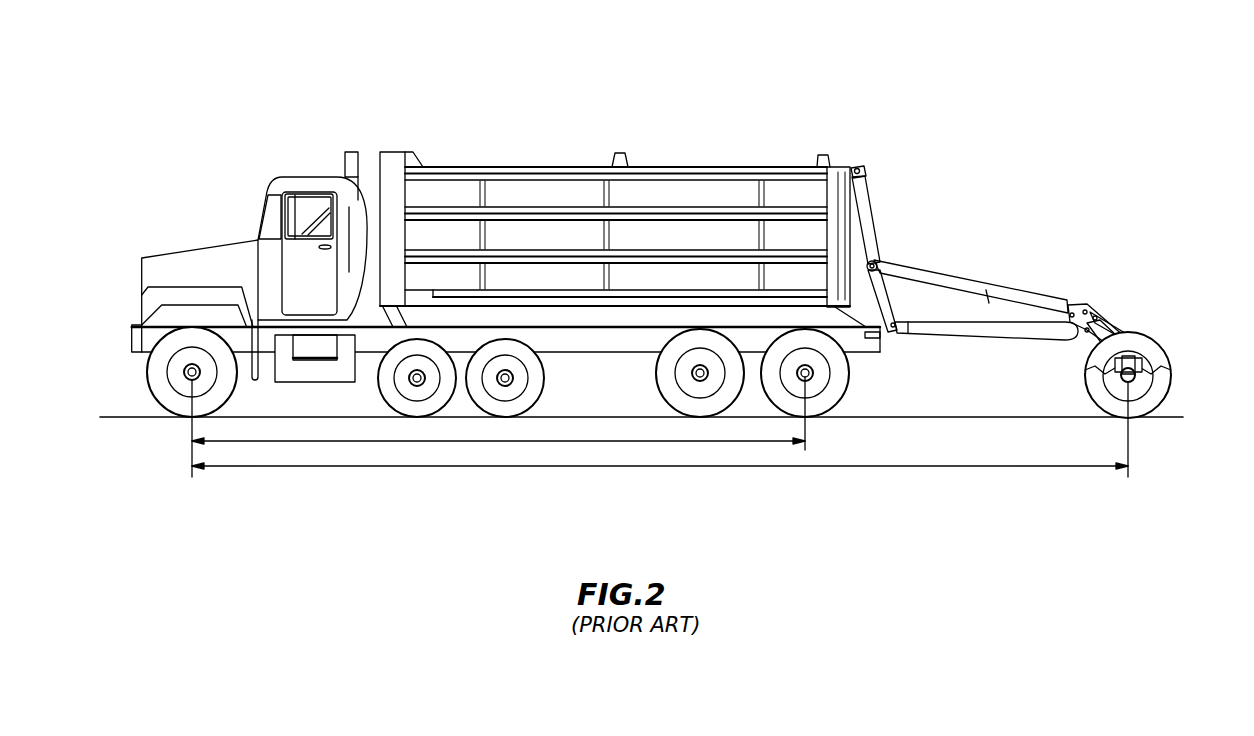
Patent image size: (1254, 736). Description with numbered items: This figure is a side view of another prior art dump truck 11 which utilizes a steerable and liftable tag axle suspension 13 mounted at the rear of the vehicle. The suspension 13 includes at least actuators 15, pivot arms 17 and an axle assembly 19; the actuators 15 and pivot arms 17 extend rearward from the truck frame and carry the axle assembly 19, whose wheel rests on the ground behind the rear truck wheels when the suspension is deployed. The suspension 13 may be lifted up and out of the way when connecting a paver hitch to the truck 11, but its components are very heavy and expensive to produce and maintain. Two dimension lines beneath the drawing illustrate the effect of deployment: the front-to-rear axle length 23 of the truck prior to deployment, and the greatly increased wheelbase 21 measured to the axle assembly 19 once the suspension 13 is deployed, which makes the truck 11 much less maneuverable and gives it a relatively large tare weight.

The truck 11 is at (853, 110).
The tag axle suspension 13 is at (1093, 320).
The actuators 15 is at (940, 273).
The pivot arms 17 is at (965, 337).
The axle assembly 19 is at (1122, 383).
The wheelbase 21 is at (493, 467).
The front-to-rear axle length 23 is at (577, 440).